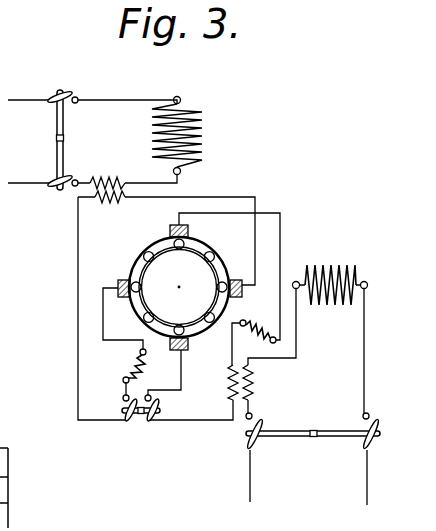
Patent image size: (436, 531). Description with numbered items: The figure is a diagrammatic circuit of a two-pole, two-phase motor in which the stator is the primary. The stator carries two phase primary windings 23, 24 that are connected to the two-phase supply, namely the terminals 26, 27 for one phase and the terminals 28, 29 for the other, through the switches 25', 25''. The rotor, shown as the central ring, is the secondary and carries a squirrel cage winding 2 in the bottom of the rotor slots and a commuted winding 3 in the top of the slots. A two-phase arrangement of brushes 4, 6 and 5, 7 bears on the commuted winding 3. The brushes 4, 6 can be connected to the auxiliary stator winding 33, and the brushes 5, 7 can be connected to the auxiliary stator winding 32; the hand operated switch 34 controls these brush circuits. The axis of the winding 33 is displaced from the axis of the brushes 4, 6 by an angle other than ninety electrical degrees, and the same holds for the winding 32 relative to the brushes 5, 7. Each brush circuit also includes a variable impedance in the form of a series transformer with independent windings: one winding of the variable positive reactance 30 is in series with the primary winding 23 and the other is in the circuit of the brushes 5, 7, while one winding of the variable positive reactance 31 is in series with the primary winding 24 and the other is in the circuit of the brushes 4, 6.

The squirrel cage winding 2 is at (197, 248).
The commuted winding 3 is at (201, 258).
The brush 4 is at (172, 225).
The brush 5 is at (121, 280).
The brush 6 is at (185, 348).
The brush 7 is at (239, 280).
The primary winding 23 is at (189, 136).
The primary winding 24 is at (330, 275).
The switch 25' is at (69, 140).
The switch 25'' is at (313, 431).
The two-phase supply terminal 26 is at (29, 93).
The two-phase supply terminal 27 is at (29, 178).
The two-phase supply terminal 28 is at (237, 476).
The two-phase supply terminal 29 is at (356, 480).
The variable positive reactance 30 is at (107, 182).
The variable positive reactance 31 is at (251, 382).
The auxiliary stator winding 32 is at (123, 366).
The auxiliary stator winding 33 is at (258, 325).
The hand operated switch 34 is at (141, 419).